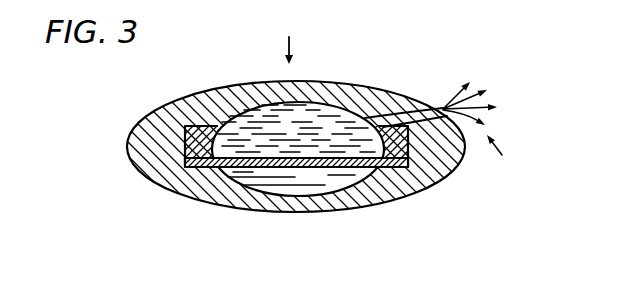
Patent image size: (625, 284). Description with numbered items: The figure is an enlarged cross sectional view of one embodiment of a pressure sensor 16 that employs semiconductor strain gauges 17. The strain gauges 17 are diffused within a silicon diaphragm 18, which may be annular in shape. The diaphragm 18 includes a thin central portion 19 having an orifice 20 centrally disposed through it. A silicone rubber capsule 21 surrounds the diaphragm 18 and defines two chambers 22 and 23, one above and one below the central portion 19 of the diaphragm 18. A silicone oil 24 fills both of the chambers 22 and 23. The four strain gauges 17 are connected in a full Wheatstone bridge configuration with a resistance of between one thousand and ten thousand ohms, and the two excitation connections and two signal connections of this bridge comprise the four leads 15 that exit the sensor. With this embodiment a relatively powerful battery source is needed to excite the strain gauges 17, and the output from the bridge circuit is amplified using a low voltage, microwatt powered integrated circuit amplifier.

The leads 15 is at (446, 133).
The pressure sensor 16 is at (298, 38).
The semiconductor strain gauges 17 is at (193, 168).
The silicon diaphragm 18 is at (392, 153).
The thin central portion 19 is at (255, 167).
The orifice 20 is at (288, 167).
The silicone rubber capsule 21 is at (393, 102).
The chamber 22 is at (297, 125).
The chamber 23 is at (322, 178).
The silicone oil 24 is at (262, 104).